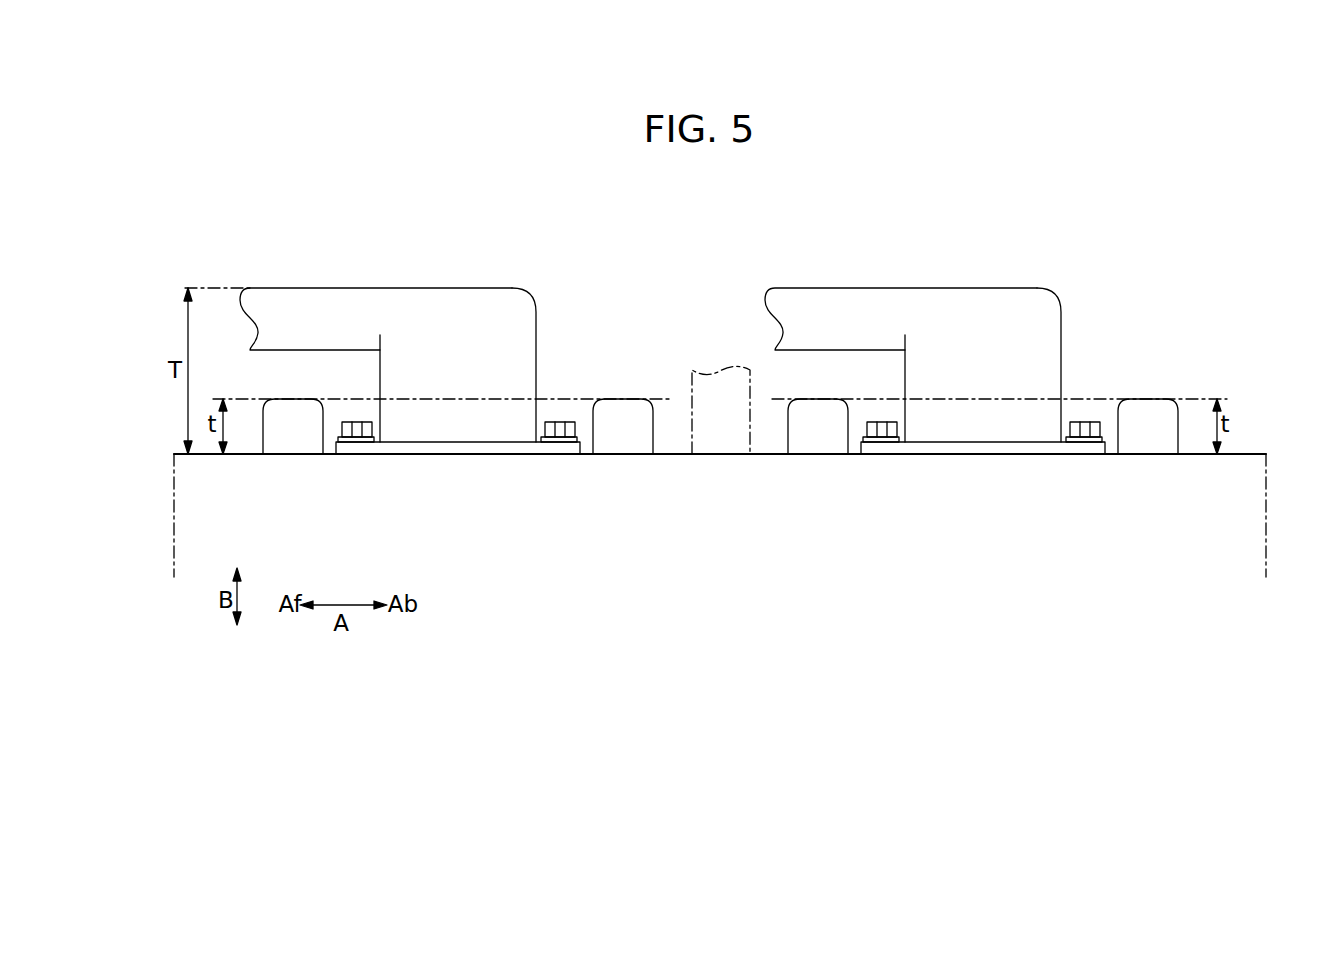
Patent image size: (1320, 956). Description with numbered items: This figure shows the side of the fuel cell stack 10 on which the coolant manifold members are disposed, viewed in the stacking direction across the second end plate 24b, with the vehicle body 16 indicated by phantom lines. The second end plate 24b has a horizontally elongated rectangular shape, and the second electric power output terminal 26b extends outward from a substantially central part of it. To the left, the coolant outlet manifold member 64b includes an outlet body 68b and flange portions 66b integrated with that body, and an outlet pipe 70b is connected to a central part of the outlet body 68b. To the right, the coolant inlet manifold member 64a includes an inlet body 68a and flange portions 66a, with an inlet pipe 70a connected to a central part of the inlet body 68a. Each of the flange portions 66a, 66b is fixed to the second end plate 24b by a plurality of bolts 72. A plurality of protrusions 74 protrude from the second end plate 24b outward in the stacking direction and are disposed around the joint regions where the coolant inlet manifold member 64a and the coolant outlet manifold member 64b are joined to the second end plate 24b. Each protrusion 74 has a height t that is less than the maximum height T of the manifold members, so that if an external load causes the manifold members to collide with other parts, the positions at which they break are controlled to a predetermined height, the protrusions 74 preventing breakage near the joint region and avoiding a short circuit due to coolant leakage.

The fuel cell stack 10 is at (692, 191).
The vehicle body 16 is at (162, 513).
The second end plate 24b is at (1250, 450).
The second electric power output terminal 26b is at (712, 382).
The coolant inlet manifold member 64a is at (946, 319).
The coolant outlet manifold member 64b is at (421, 319).
The flange portions 66a is at (968, 449).
The flange portions 66b is at (443, 449).
The inlet body 68a is at (1028, 327).
The outlet body 68b is at (503, 327).
The inlet pipe 70a is at (834, 300).
The outlet pipe 70b is at (309, 300).
The bolts 72 is at (353, 431).
The protrusions 74 is at (297, 443).